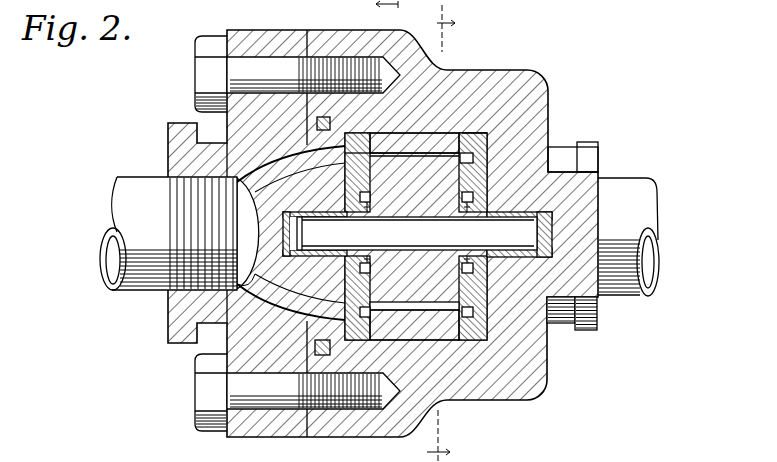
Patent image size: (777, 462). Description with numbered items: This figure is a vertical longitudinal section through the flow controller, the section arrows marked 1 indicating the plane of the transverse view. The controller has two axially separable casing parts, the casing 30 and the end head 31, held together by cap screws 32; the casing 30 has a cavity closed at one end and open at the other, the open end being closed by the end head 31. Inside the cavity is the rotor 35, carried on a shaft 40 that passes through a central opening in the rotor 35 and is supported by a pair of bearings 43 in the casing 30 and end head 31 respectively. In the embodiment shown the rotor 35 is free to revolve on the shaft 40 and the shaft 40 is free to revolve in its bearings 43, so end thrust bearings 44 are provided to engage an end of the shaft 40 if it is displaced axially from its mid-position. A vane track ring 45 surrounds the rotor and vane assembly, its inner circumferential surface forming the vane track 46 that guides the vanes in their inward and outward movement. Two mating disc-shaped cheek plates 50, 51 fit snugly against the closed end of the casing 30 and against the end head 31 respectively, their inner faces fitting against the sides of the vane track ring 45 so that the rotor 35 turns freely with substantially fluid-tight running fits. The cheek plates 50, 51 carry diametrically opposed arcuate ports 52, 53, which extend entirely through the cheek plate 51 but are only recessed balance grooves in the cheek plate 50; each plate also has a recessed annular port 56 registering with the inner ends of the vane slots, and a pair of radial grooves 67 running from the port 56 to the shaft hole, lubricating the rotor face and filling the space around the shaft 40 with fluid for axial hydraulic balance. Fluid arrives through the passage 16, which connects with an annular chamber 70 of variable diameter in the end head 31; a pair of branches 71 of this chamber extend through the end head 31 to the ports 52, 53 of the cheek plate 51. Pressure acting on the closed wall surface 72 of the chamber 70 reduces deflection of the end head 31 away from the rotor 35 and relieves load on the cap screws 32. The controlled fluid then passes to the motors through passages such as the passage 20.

The section line 1 is at (415, 231).
The passage 16 is at (144, 182).
The passage 20 is at (634, 190).
The casing 30 is at (535, 79).
The end head 31 is at (271, 33).
The cap screws 32 is at (195, 78).
The rotor 35 is at (441, 194).
The shaft 40 is at (443, 239).
The bearings 43 is at (331, 212).
The end thrust bearings 44 is at (553, 231).
The vane track ring 45 is at (435, 140).
The vane track 46 is at (410, 153).
The cheek plate 50 is at (479, 135).
The cheek plate 51 is at (362, 152).
The port 52 is at (348, 136).
The port 53 is at (352, 307).
The annular groove or port 56 is at (368, 196).
The radial grooves 67 is at (371, 209).
The annular chamber 70 is at (243, 207).
The branches or extensions 71 is at (303, 156).
The wall surface 72 is at (247, 280).